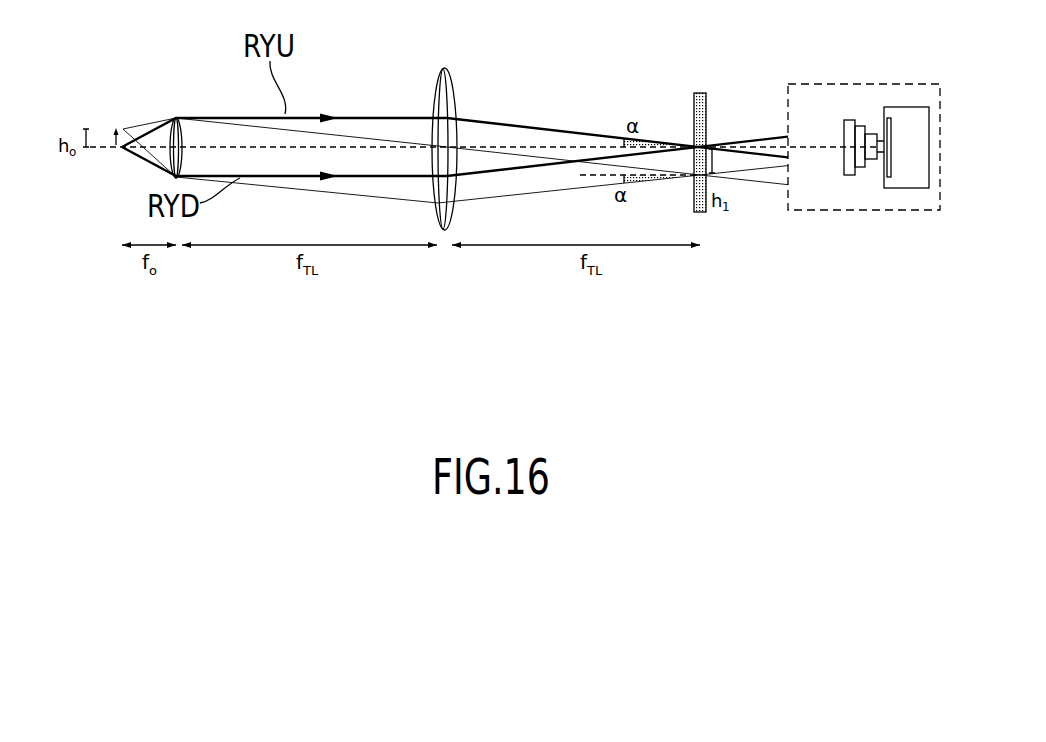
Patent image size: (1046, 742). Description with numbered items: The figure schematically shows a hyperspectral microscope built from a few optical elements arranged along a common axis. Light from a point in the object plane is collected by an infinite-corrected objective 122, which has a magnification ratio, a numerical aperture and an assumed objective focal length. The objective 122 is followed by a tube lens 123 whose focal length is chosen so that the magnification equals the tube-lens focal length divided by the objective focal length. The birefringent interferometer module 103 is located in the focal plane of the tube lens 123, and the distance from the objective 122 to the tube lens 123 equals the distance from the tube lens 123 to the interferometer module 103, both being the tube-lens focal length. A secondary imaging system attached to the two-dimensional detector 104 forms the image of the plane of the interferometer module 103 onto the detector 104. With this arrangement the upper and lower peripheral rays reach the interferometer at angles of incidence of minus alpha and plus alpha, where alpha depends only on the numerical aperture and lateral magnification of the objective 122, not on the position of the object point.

The infinite-corrected objective 122 is at (182, 132).
The tube lens 123 is at (433, 102).
The birefringent interferometer module 103 is at (668, 58).
The 2D detector 104 is at (907, 190).